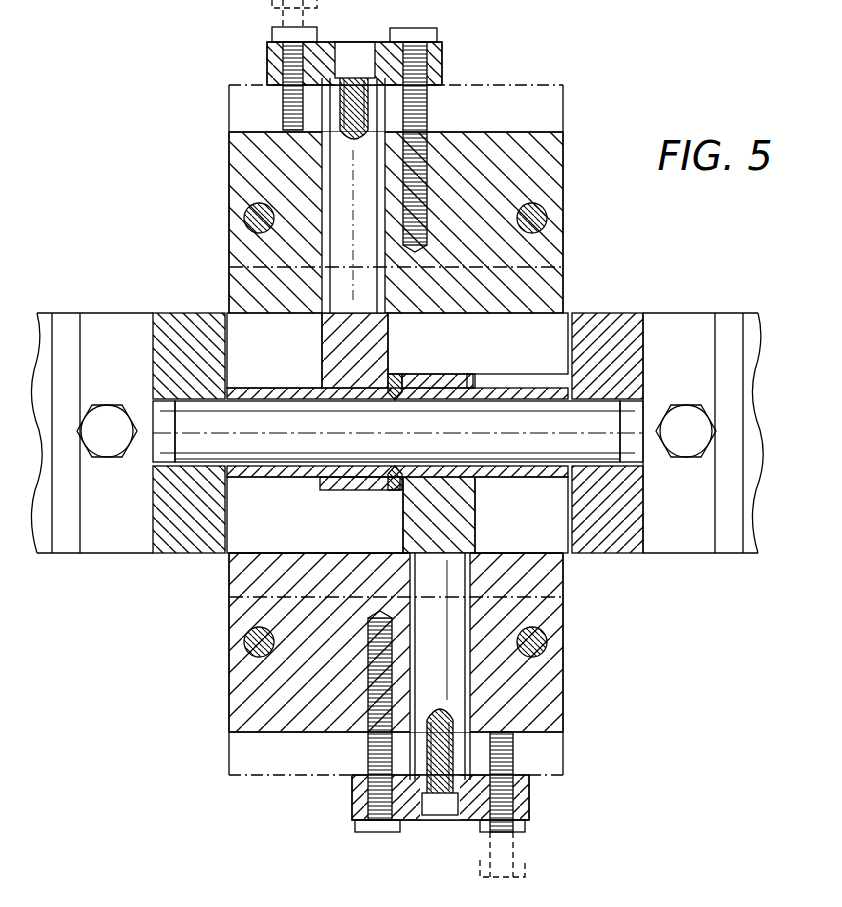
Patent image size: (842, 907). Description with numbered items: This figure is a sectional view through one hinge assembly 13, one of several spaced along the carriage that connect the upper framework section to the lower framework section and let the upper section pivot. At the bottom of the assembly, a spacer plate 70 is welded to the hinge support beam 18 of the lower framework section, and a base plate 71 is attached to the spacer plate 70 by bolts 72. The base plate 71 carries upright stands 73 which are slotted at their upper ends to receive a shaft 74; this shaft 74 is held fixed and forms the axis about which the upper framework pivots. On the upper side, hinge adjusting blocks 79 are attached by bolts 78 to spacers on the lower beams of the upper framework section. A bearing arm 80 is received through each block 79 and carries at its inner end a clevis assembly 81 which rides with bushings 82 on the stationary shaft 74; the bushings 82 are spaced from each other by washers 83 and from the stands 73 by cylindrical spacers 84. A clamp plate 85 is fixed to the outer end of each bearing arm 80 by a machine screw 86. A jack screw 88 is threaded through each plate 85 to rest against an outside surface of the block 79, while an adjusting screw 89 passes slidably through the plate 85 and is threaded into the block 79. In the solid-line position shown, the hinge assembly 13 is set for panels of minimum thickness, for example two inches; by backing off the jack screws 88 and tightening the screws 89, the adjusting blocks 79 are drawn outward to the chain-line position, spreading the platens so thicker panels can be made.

The hinge assembly 13 is at (193, 288).
The hinge support beam 18 is at (758, 446).
The spacer plate 70 is at (733, 535).
The base plate 71 is at (107, 530).
The bolts 72 is at (110, 410).
The upright stands 73 is at (190, 520).
The shaft 74 is at (443, 434).
The bolts 78 is at (248, 218).
The hinge adjusting block 79 is at (555, 188).
The bearing arm 80 is at (333, 199).
The clevis assembly 81 is at (330, 338).
The bushings 82 is at (474, 377).
The washers 83 is at (397, 372).
The cylindrical spacers 84 is at (258, 470).
The clamp plate 85 is at (442, 63).
The machine screw 86 is at (358, 58).
The jack screw 88 is at (315, 30).
The adjusting screw 89 is at (437, 33).